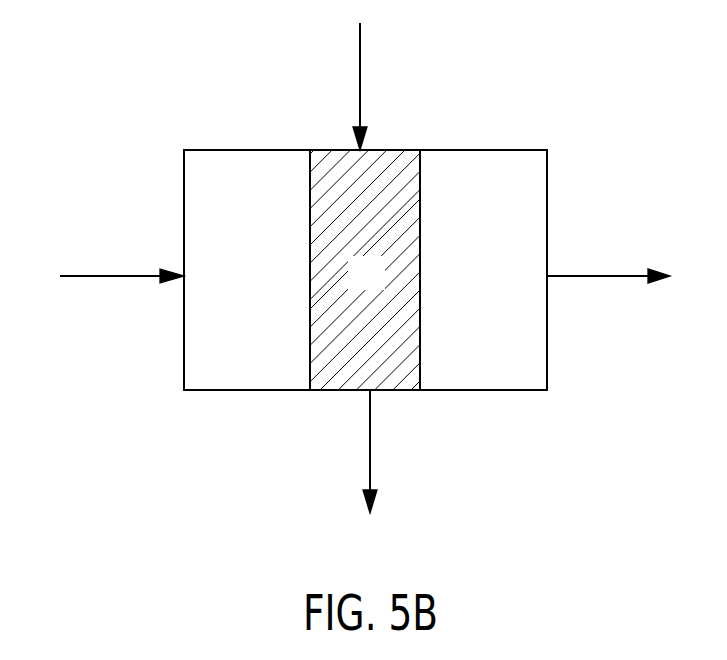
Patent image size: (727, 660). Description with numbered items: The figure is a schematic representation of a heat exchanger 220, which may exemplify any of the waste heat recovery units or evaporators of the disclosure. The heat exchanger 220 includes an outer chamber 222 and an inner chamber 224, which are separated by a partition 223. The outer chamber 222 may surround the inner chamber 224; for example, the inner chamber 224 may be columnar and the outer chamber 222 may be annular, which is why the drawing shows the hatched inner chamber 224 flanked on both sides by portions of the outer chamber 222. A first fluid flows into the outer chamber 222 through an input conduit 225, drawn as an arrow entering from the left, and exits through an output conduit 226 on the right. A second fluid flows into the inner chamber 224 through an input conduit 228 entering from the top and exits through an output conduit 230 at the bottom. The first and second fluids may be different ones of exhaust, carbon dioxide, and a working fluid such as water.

The heat exchanger 220 is at (108, 420).
The outer chamber 222 is at (258, 286).
The partition 223 is at (421, 178).
The inner chamber 224 is at (380, 286).
The input conduit 225 is at (113, 277).
The output conduit 226 is at (594, 278).
The input conduit 228 is at (360, 67).
The output conduit 230 is at (372, 443).